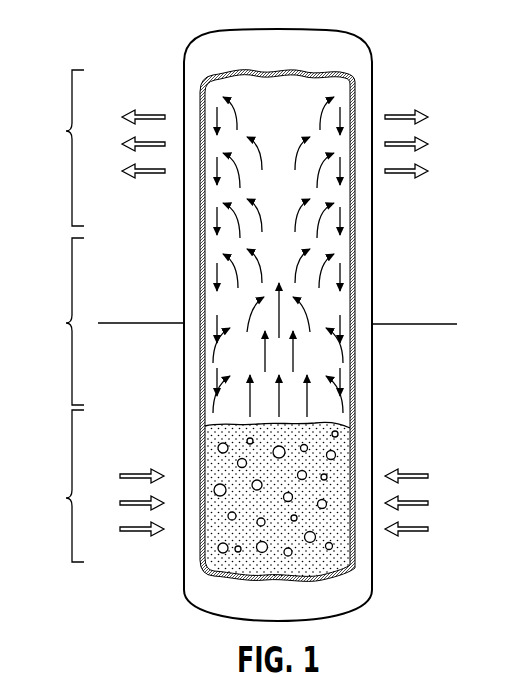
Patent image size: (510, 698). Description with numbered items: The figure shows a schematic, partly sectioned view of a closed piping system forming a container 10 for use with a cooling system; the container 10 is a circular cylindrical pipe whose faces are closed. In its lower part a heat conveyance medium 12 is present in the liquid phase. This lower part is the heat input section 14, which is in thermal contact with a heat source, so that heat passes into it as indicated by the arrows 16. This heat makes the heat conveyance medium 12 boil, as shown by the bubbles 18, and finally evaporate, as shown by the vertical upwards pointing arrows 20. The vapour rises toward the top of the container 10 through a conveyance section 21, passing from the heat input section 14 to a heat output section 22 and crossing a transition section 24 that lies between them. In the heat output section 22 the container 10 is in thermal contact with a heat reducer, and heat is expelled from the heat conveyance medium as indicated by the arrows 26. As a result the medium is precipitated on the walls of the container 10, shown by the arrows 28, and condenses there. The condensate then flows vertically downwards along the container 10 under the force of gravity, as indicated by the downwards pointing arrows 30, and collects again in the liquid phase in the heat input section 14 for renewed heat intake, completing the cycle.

The container 10 is at (354, 38).
The heat conveyance medium 12 is at (340, 553).
The heat input section 14 is at (66, 498).
The arrow 16 is at (410, 470).
The bubbles 18 is at (308, 448).
The upwards pointing arrows 20 is at (280, 397).
The conveyance section 21 is at (66, 323).
The heat output section 22 is at (66, 131).
The transition section 24 is at (405, 323).
The arrows 26 is at (405, 110).
The arrows 28 is at (237, 130).
The downwards pointing arrows 30 is at (340, 227).